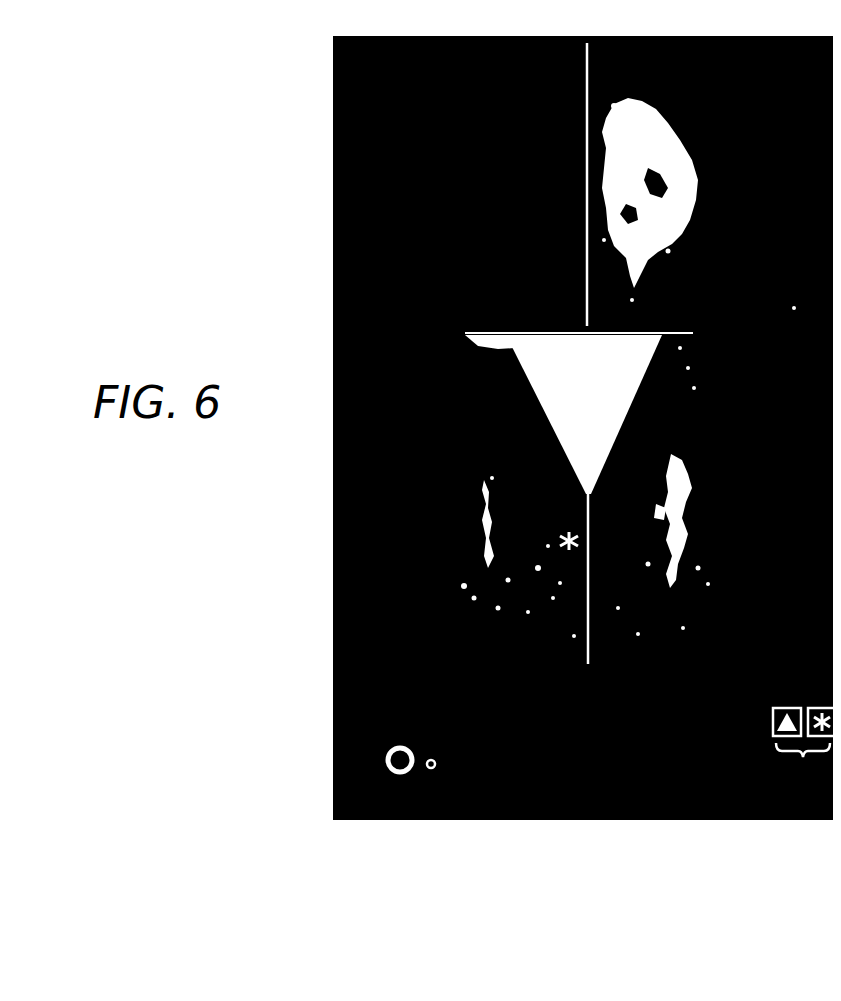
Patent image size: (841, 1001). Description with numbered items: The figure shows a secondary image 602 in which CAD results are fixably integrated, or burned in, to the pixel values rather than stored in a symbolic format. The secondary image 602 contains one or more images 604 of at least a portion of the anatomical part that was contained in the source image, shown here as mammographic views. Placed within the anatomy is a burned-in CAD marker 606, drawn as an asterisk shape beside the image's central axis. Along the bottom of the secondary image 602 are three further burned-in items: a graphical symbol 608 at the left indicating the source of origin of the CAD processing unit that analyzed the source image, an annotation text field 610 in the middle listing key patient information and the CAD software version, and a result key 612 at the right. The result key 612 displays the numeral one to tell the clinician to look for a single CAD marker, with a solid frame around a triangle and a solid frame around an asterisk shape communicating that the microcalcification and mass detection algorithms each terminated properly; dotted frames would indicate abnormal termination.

The secondary image 602 is at (511, 463).
The images 604 is at (538, 285).
The CAD marker 606 is at (540, 536).
The graphical symbol 608 is at (439, 817).
The annotation text field 610 is at (745, 817).
The result key 612 is at (832, 817).